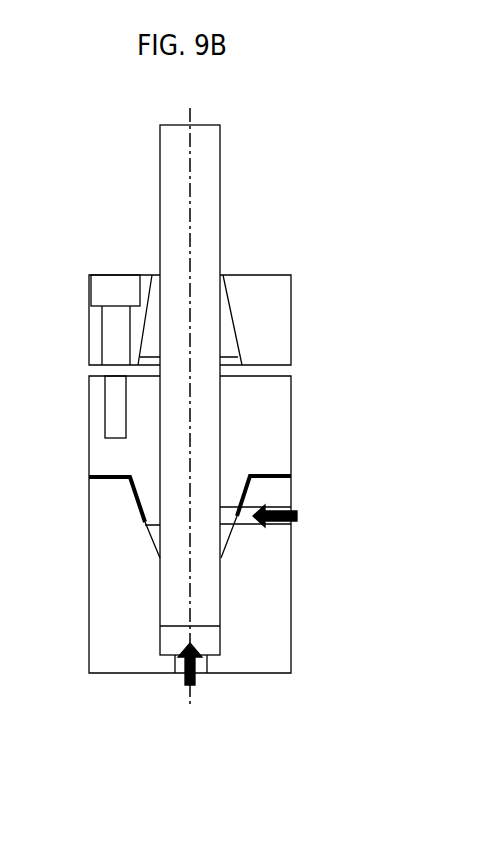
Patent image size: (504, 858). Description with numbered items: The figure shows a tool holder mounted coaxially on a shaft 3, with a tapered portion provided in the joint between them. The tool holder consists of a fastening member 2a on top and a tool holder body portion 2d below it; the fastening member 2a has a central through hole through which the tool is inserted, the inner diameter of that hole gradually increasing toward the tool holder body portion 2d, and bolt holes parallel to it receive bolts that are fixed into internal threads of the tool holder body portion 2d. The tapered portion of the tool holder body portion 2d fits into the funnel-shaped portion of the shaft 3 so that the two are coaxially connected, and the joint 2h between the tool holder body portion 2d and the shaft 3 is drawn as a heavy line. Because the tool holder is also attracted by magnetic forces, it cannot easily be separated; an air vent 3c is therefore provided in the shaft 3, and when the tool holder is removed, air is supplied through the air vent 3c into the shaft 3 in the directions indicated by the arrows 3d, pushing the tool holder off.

The fastening member 2a is at (272, 315).
The tool holder body portion 2d is at (272, 422).
The joint 2h is at (277, 472).
The air vent 3c is at (282, 505).
The shaft 3 is at (115, 618).
The arrows 3d is at (292, 524).